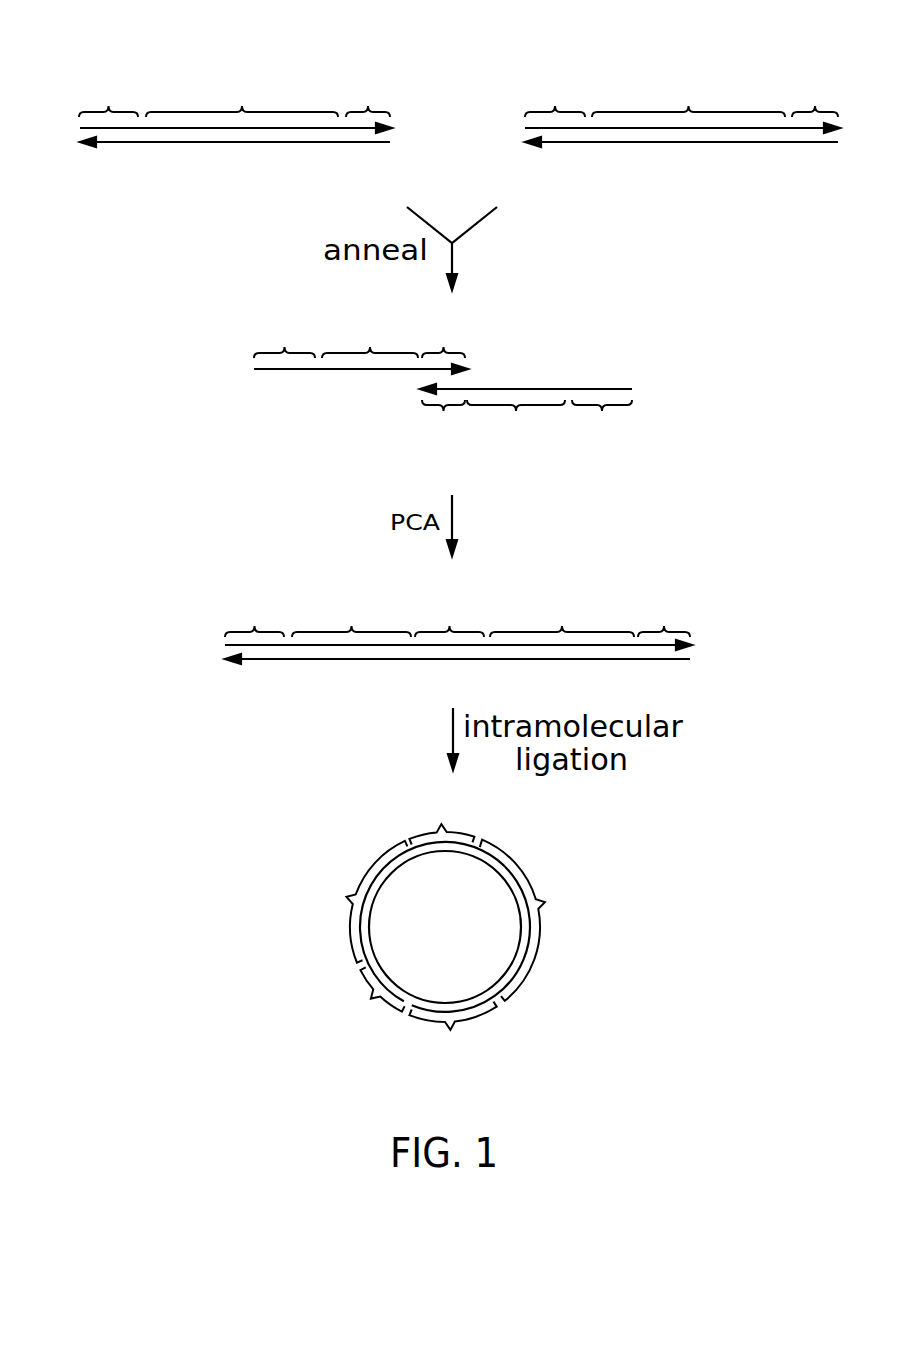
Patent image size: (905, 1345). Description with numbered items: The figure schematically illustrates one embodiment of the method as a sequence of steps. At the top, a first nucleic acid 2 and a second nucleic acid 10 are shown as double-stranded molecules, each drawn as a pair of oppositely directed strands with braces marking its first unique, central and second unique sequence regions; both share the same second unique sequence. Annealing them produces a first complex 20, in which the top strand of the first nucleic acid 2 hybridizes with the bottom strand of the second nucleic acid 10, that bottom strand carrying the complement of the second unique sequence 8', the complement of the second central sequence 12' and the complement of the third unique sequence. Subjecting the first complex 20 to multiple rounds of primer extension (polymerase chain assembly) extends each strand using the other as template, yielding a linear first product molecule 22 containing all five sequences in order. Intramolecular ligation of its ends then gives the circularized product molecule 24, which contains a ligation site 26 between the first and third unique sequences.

The first nucleic acid 2 is at (93, 46).
The complement of the second unique sequence 8' is at (443, 422).
The second nucleic acid 10 is at (525, 58).
The complement of the second central sequence 12' is at (516, 422).
The first complex 20 is at (529, 323).
The first product molecule 22 is at (568, 545).
The circularized product molecule 24 is at (538, 847).
The ligation site 26 is at (405, 1012).